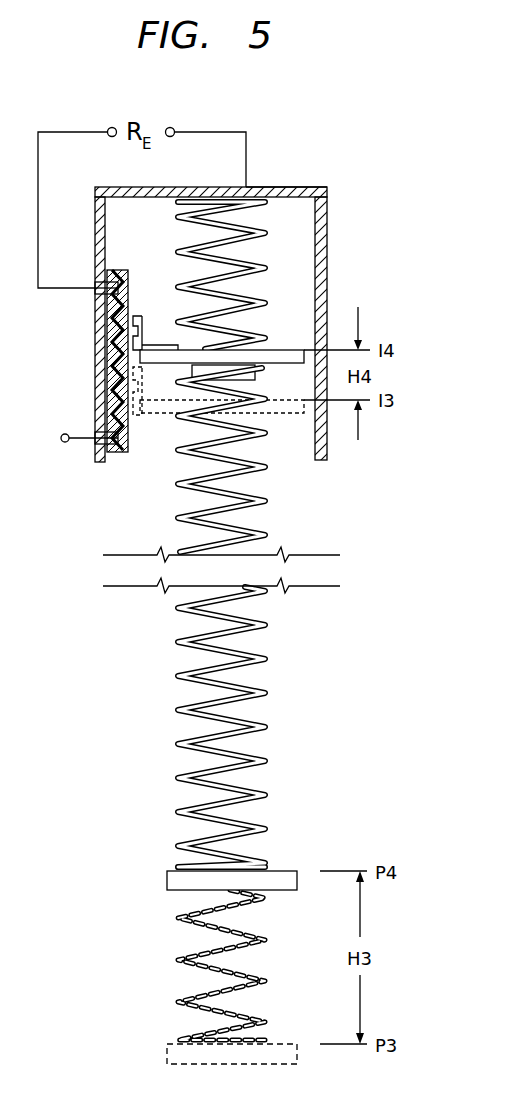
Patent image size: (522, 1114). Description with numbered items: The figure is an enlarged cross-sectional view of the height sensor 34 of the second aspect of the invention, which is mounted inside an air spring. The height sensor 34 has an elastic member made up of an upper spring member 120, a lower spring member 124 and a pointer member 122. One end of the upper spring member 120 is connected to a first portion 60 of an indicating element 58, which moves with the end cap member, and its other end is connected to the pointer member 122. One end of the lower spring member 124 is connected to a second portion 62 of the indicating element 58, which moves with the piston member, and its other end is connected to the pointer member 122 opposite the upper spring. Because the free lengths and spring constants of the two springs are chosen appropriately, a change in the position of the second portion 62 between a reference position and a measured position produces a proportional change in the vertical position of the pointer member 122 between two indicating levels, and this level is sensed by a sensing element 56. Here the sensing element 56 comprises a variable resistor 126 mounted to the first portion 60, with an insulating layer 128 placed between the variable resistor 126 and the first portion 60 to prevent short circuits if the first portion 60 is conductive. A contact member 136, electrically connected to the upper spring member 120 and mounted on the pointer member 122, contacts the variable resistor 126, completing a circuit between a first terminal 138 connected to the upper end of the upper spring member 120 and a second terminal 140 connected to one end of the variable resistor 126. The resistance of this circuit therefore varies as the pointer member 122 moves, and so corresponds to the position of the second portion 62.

The height sensor 34 is at (278, 130).
The sensing element 56 is at (88, 398).
The indicating element 58 is at (344, 237).
The first portion 60 is at (300, 187).
The second portion 62 is at (167, 879).
The upper spring member 120 is at (180, 245).
The pointer member 122 is at (282, 350).
The lower spring member 124 is at (265, 655).
The variable resistor 126 is at (128, 427).
The insulating layer 128 is at (110, 371).
The contact member 136 is at (150, 316).
The first terminal 138 is at (212, 132).
The second terminal 140 is at (72, 132).